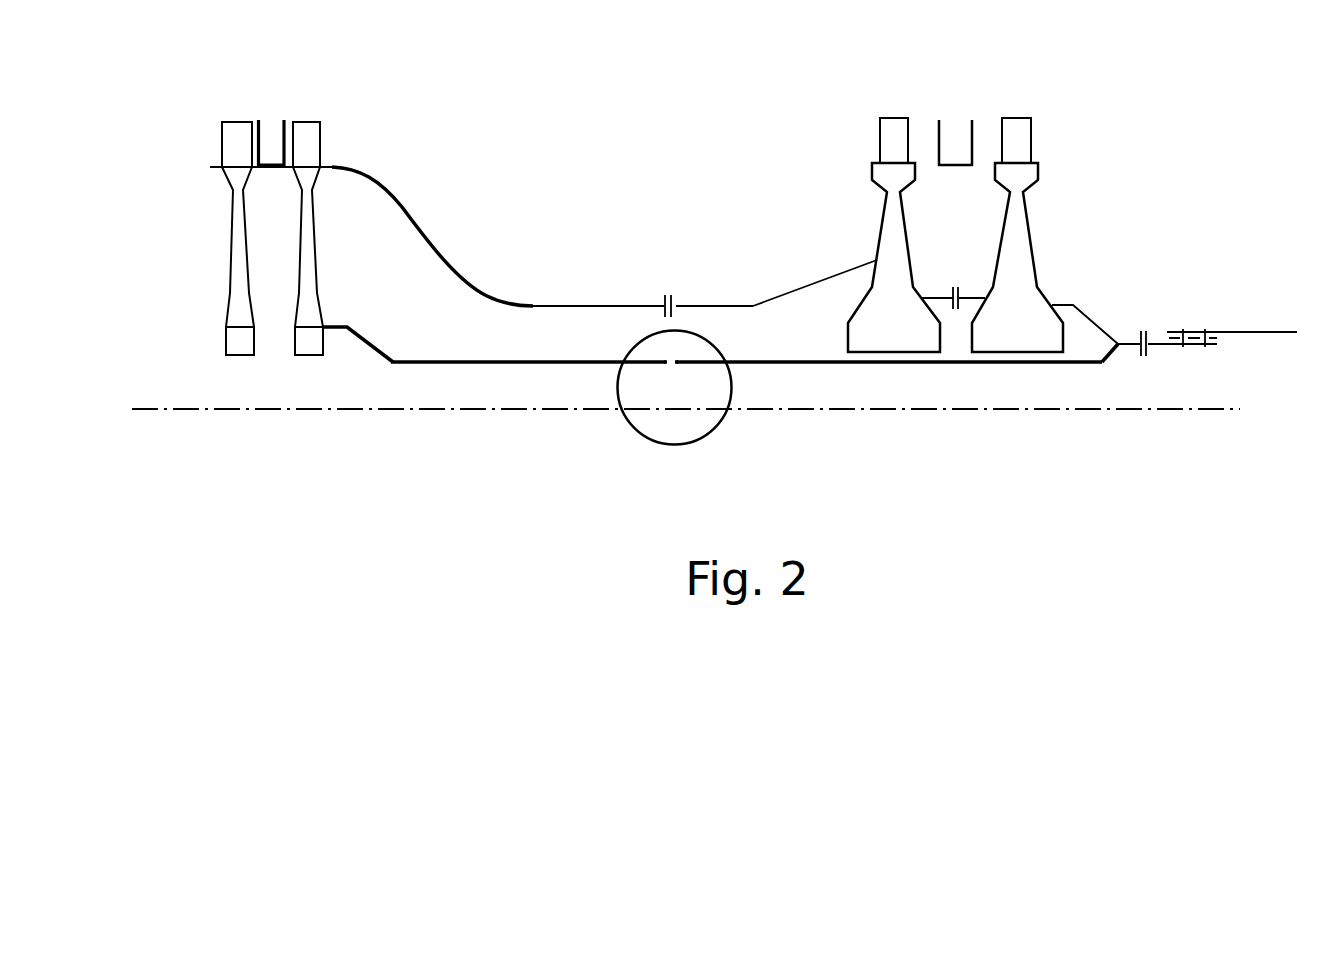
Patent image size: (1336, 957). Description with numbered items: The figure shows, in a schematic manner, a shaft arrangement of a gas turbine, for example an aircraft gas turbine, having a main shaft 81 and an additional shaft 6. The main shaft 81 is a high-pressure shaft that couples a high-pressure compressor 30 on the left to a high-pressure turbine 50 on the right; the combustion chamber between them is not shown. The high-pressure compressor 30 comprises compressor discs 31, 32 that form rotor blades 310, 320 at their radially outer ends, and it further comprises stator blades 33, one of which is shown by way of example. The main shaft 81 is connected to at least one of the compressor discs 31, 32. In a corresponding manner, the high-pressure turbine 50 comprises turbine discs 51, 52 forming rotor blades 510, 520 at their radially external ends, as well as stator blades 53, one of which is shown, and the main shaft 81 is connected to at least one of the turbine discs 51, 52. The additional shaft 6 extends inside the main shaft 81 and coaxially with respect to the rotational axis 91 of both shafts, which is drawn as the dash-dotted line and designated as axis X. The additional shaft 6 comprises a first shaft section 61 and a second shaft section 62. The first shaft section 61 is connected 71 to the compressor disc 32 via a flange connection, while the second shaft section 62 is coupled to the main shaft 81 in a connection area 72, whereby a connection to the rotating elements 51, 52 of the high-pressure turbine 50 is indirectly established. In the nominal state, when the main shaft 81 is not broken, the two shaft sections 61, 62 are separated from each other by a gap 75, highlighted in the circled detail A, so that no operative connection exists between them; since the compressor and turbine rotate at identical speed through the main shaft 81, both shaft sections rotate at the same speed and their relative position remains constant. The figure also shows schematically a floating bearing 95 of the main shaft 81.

The high-pressure compressor 30 is at (273, 94).
The stator blades 33 is at (270, 126).
The rotor blades 310 is at (237, 139).
The rotor blades 320 is at (310, 139).
The compressor disc 31 is at (233, 220).
The compressor disc 32 is at (312, 220).
The main shaft 81 is at (500, 296).
The connection 71 is at (333, 338).
The additional shaft 6 is at (487, 372).
The first shaft section 61 is at (577, 367).
The second shaft section 62 is at (815, 366).
The gap 75 is at (670, 372).
The detail A is at (675, 378).
The rotation axis X is at (723, 418).
The high-pressure turbine 50 is at (961, 94).
The stator blades 53 is at (955, 126).
The rotor blades 510 is at (890, 135).
The rotor blades 520 is at (1018, 135).
The turbine disc 51 is at (887, 203).
The turbine disc 52 is at (1023, 203).
The floating bearing 95 is at (1193, 328).
The connection area 72 is at (1141, 362).
The rotational axis 91 is at (1197, 411).